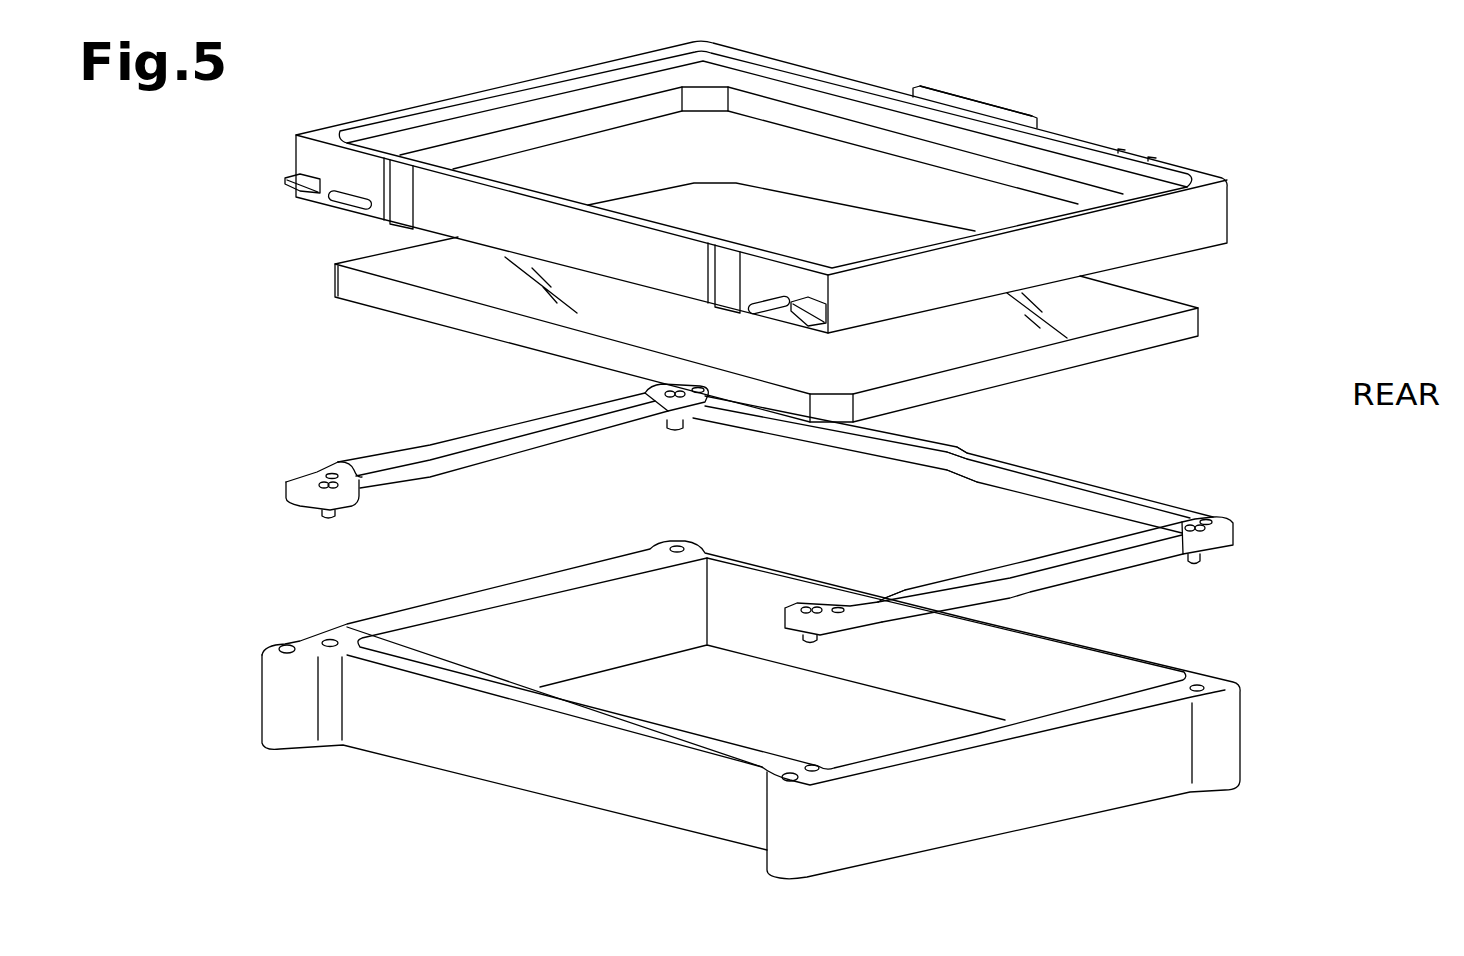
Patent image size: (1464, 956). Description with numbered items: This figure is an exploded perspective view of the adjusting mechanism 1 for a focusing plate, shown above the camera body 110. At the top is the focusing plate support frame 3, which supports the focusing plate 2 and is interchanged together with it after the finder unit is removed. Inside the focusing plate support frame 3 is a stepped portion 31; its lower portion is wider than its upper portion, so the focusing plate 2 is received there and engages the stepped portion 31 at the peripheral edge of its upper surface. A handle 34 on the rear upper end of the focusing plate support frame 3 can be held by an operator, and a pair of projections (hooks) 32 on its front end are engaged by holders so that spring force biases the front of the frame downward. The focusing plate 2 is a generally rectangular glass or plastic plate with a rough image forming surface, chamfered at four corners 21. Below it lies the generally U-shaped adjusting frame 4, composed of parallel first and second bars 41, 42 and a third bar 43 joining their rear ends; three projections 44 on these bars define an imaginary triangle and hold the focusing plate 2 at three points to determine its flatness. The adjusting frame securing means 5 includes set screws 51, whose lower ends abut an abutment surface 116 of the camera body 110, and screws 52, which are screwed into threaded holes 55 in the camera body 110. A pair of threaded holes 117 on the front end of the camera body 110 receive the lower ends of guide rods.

The adjusting mechanism 1 is at (293, 527).
The focusing plate 2 is at (760, 316).
The focusing plate support frame 3 is at (733, 202).
The adjusting frame 4 is at (769, 513).
The adjusting frame securing means 5 is at (769, 513).
The corners 21 is at (703, 183).
The stepped portion 31 is at (596, 134).
The projections (hooks) 32 is at (296, 182).
The handle 34 is at (993, 103).
The first bar 41 is at (555, 440).
The second bar 42 is at (1064, 574).
The third bar 43 is at (1015, 488).
The projections 44 is at (350, 468).
The set screws 51 is at (330, 475).
The screws 52 is at (328, 518).
The threaded holes 55 is at (335, 640).
The camera body 110 is at (752, 685).
The abutment surface 116 is at (505, 590).
The threaded holes 117 is at (287, 645).